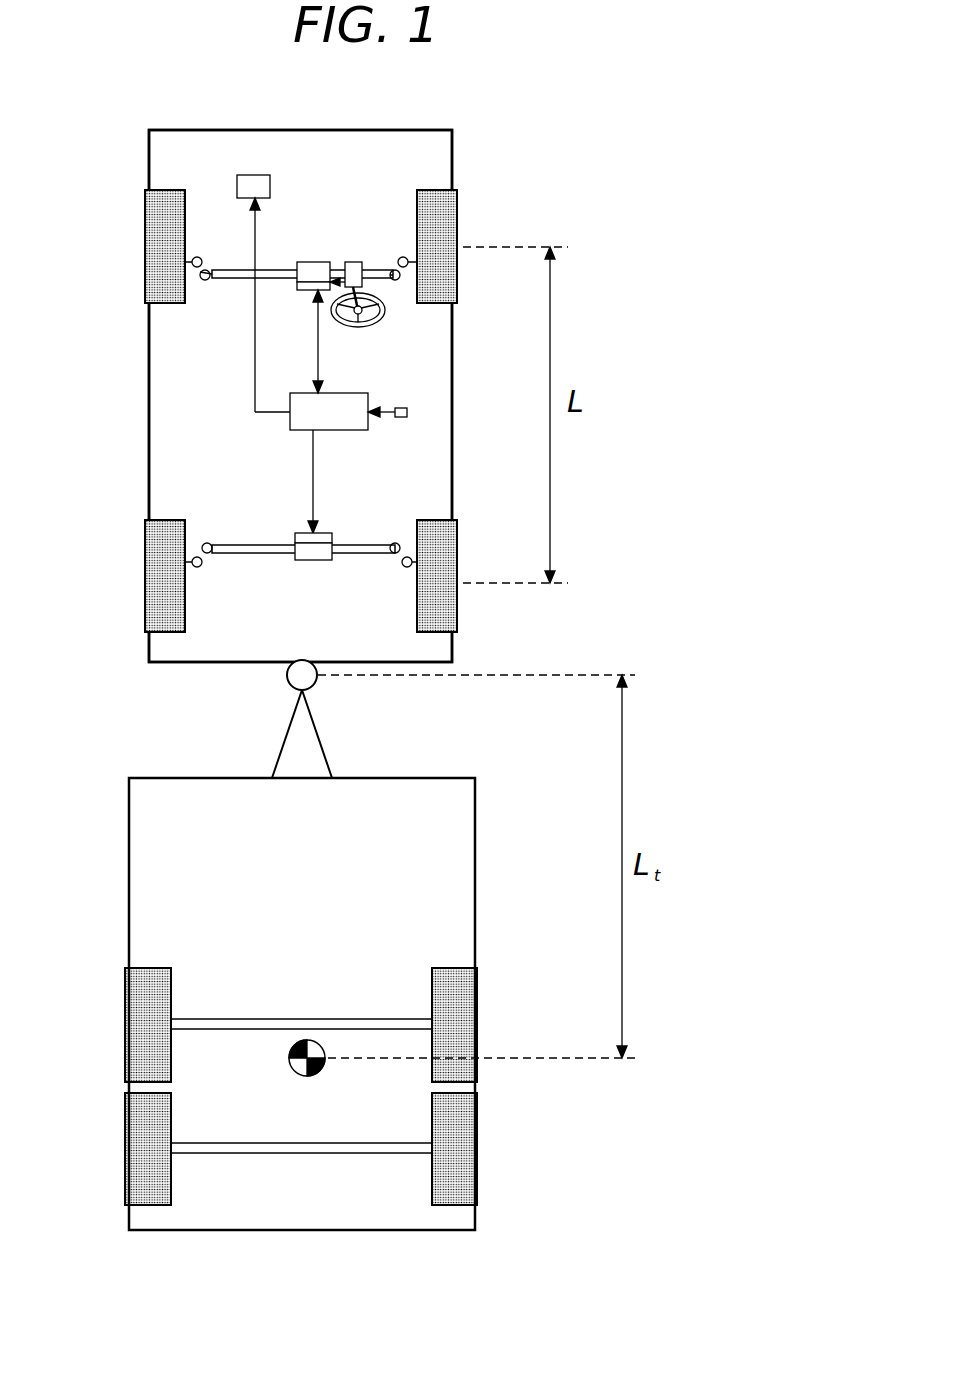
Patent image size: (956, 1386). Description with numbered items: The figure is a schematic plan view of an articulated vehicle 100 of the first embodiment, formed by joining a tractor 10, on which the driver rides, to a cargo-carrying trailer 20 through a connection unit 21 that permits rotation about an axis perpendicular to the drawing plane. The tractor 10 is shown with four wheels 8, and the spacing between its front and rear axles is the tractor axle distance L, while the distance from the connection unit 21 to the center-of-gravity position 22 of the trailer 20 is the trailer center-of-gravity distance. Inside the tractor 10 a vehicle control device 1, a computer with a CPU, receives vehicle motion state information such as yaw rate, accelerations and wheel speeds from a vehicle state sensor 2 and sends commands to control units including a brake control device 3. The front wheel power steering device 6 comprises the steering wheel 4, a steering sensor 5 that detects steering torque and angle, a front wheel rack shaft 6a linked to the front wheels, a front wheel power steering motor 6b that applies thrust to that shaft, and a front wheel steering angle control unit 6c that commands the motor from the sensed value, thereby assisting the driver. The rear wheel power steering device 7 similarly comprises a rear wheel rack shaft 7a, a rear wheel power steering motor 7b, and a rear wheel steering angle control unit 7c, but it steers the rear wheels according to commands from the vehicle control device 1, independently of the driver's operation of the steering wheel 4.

The articulated vehicle 100 is at (480, 122).
The tractor 10 is at (475, 186).
The wheels 8 is at (145, 273).
The vehicle control device 1 is at (350, 423).
The vehicle state sensor 2 is at (408, 410).
The brake control device 3 is at (258, 177).
The steering wheel 4 is at (370, 327).
The steering sensor 5 is at (353, 263).
The front wheel power steering device 6 is at (301, 264).
The front wheel rack shaft 6a is at (238, 282).
The front wheel power steering motor 6b is at (315, 268).
The front wheel steering angle control unit 6c is at (303, 293).
The rear wheel power steering device 7 is at (301, 558).
The rear wheel rack shaft 7a is at (245, 553).
The rear wheel power steering motor 7b is at (322, 568).
The rear wheel steering angle control unit 7c is at (303, 535).
The trailer 20 is at (485, 872).
The connection unit 21 is at (287, 683).
The center-of-gravity position 22 is at (318, 1072).